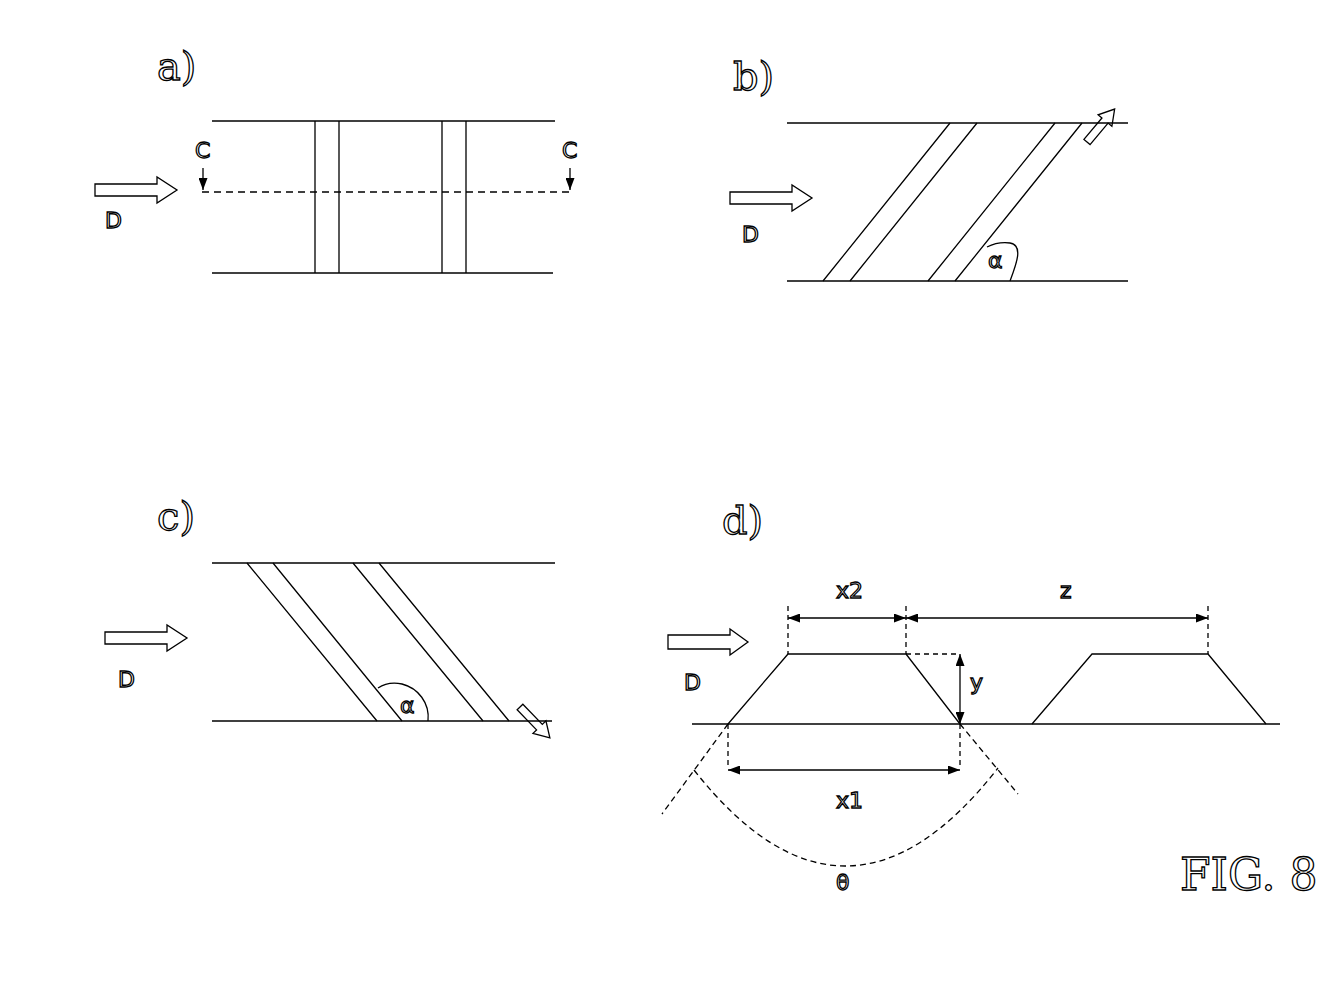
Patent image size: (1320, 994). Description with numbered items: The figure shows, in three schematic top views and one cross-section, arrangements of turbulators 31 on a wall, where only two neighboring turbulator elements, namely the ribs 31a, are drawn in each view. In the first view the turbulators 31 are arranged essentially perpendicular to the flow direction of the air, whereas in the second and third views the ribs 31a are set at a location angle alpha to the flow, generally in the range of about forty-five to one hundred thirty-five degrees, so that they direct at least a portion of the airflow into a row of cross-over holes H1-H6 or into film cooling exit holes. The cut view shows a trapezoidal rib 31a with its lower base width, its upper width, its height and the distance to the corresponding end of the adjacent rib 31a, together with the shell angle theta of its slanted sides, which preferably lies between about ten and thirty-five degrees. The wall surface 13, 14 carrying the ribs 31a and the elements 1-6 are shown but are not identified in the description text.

The printing blanket / transfer sheet surface 13 is at (746, 427).
The printing blanket / transfer sheet surface 14 is at (263, 119).
The turbulator 31 is at (968, 500).
The rib 31a is at (330, 135).
The printing units / sheets 1 to 6 1-6 is at (248, 240).
The cross-over holes H1-H6 is at (1110, 128).